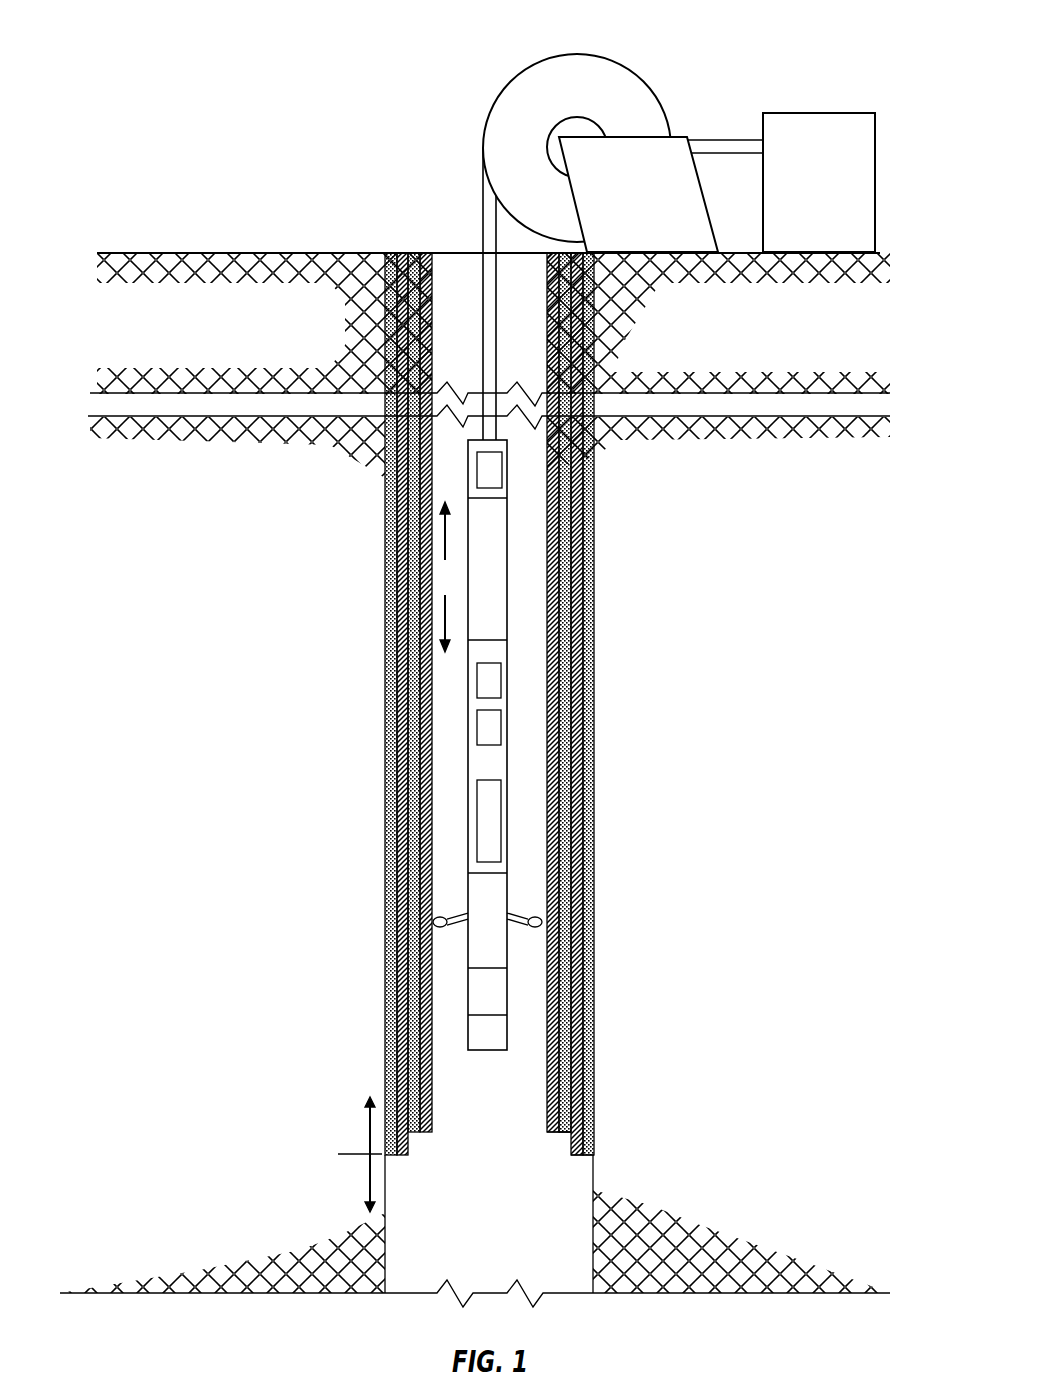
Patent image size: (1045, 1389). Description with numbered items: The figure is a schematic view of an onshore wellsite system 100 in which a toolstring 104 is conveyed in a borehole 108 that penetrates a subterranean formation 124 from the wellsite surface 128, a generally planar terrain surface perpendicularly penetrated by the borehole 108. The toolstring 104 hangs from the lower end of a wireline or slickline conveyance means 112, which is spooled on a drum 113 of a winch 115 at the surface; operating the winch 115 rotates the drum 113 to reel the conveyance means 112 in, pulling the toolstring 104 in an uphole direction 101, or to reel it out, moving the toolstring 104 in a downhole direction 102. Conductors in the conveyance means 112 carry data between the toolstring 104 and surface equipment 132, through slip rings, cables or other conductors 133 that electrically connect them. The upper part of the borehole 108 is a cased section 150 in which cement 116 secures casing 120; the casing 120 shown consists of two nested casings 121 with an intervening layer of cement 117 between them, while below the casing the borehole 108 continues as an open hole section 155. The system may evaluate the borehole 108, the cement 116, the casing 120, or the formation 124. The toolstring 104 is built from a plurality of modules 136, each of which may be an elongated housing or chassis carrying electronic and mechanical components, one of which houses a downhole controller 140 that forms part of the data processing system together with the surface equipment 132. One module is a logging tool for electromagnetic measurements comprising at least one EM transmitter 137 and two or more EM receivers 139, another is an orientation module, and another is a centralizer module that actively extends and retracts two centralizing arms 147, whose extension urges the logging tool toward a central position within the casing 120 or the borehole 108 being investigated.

The wellsite system 100 is at (289, 63).
The uphole direction 101 is at (445, 538).
The downhole direction 102 is at (445, 617).
The toolstring 104 is at (513, 779).
The borehole 108 is at (459, 270).
The conveyance means 112 is at (497, 347).
The drum 113 is at (517, 80).
The winch 115 is at (708, 213).
The cement 116 is at (385, 1052).
The intervening layer of cement 117 is at (565, 1140).
The casing 120 is at (430, 1163).
The nested casings 121 is at (558, 1133).
The subterranean formation 124 is at (372, 383).
The wellsite surface 128 is at (190, 242).
The surface equipment 132 is at (818, 113).
The slip rings, cables, and/or other conductors 133 is at (723, 140).
The modules 136 is at (507, 557).
The EM transmitter 137 is at (477, 820).
The EM receivers 139 is at (477, 728).
The downhole controller 140 is at (502, 468).
The centralizing arms 147 is at (440, 942).
The cased section 150 is at (356, 1125).
The open hole section 155 is at (352, 1183).